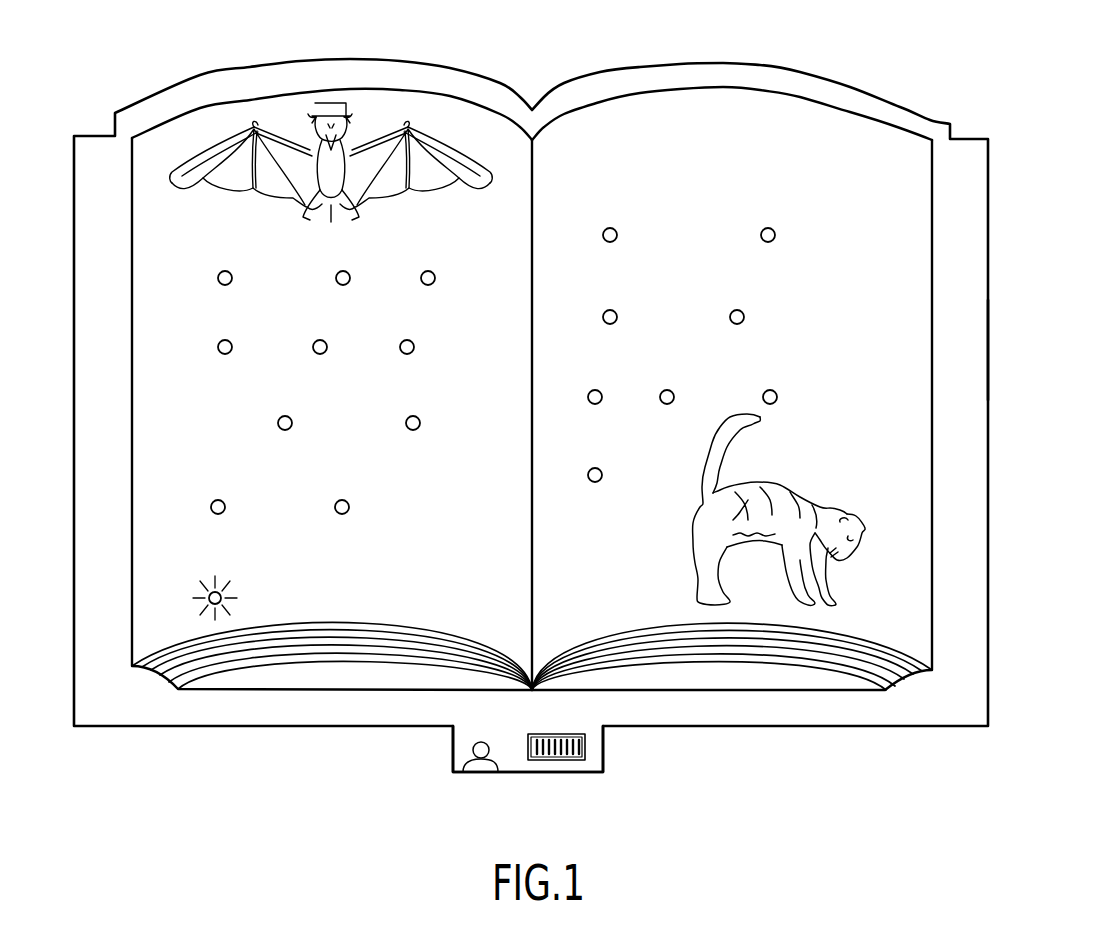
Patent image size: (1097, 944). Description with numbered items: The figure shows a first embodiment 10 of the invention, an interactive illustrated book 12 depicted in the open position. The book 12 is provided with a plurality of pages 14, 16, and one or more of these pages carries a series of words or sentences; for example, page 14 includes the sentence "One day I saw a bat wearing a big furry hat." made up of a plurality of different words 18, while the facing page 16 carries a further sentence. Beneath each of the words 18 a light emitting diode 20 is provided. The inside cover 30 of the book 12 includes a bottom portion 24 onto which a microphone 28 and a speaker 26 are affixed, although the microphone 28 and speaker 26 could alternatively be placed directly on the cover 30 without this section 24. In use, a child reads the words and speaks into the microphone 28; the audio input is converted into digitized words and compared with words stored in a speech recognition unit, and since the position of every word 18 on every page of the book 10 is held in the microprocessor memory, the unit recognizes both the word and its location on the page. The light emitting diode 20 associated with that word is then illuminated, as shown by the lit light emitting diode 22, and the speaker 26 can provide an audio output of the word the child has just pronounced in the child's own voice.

The first embodiment 10 is at (1006, 118).
The illustrated book 12 is at (988, 345).
The page 14 is at (466, 597).
The page 16 is at (904, 618).
The words 18 is at (437, 245).
The light emitting diode 20 is at (419, 428).
The light emitting diode 22 is at (222, 600).
The bottom portion 24 is at (604, 748).
The speaker 26 is at (567, 765).
The microphone 28 is at (472, 772).
The inside cover 30 is at (516, 729).